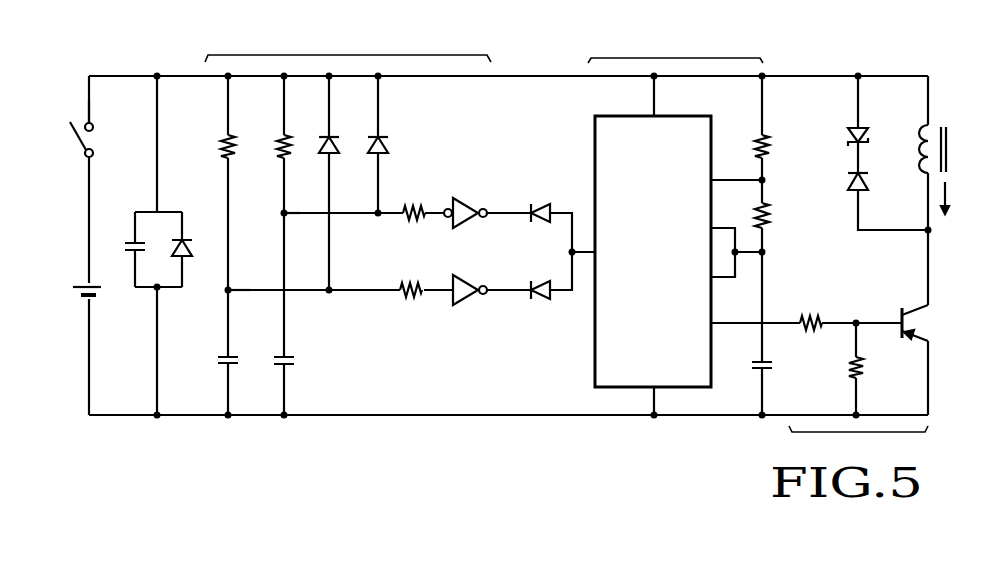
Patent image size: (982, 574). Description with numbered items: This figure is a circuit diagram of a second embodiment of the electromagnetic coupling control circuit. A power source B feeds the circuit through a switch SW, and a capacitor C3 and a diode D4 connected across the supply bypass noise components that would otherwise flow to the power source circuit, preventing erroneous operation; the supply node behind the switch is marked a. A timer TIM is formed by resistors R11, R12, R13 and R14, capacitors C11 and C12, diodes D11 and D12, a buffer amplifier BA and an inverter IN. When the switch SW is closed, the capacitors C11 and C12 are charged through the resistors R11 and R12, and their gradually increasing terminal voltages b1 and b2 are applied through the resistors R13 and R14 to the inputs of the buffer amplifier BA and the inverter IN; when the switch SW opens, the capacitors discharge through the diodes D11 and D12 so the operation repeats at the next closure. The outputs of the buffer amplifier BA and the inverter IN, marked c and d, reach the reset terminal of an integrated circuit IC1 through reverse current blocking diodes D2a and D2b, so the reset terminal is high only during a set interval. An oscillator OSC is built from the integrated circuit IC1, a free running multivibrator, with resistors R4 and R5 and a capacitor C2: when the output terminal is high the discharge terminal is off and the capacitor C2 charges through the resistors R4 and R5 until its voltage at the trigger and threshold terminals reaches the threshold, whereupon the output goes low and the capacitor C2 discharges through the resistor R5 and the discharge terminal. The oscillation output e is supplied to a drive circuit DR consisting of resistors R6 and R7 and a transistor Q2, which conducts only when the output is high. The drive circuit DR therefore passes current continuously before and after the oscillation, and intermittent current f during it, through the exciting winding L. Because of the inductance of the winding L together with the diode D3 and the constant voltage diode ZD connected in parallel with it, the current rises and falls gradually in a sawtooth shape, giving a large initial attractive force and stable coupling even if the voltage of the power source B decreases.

The switch SW is at (92, 138).
The power source B is at (100, 288).
The capacitor C3 is at (126, 243).
The diode D4 is at (192, 243).
The resistor R12 is at (220, 142).
The resistor R11 is at (273, 144).
The capacitor C12 is at (216, 360).
The capacitor C11 is at (296, 362).
The diode D12 is at (336, 139).
The diode D11 is at (392, 143).
The resistor R13 is at (410, 205).
The resistor R14 is at (408, 283).
The buffer amplifier BA is at (470, 197).
The inverter IN is at (466, 276).
The reverse current blocking diode D2a is at (538, 204).
The reverse current blocking diode D2b is at (537, 281).
The integrated circuit IC1 is at (653, 250).
The resistor R4 is at (772, 140).
The resistor R5 is at (772, 213).
The capacitor C2 is at (775, 364).
The resistor R6 is at (812, 315).
The resistor R7 is at (868, 368).
The transistor Q2 is at (912, 320).
The constant voltage diode ZD is at (868, 128).
The diode D3 is at (848, 177).
The exciting winding L is at (920, 152).
The timer TIM is at (348, 43).
The oscillator OSC is at (675, 45).
The drive circuit DR is at (858, 444).
The signal point a is at (103, 107).
The terminal voltage of capacitor C11 b1 is at (275, 199).
The terminal voltage of capacitor C12 b2 is at (249, 274).
The oscillation output c is at (509, 196).
The current d is at (509, 273).
The oscillation output e is at (736, 306).
The current f is at (958, 198).